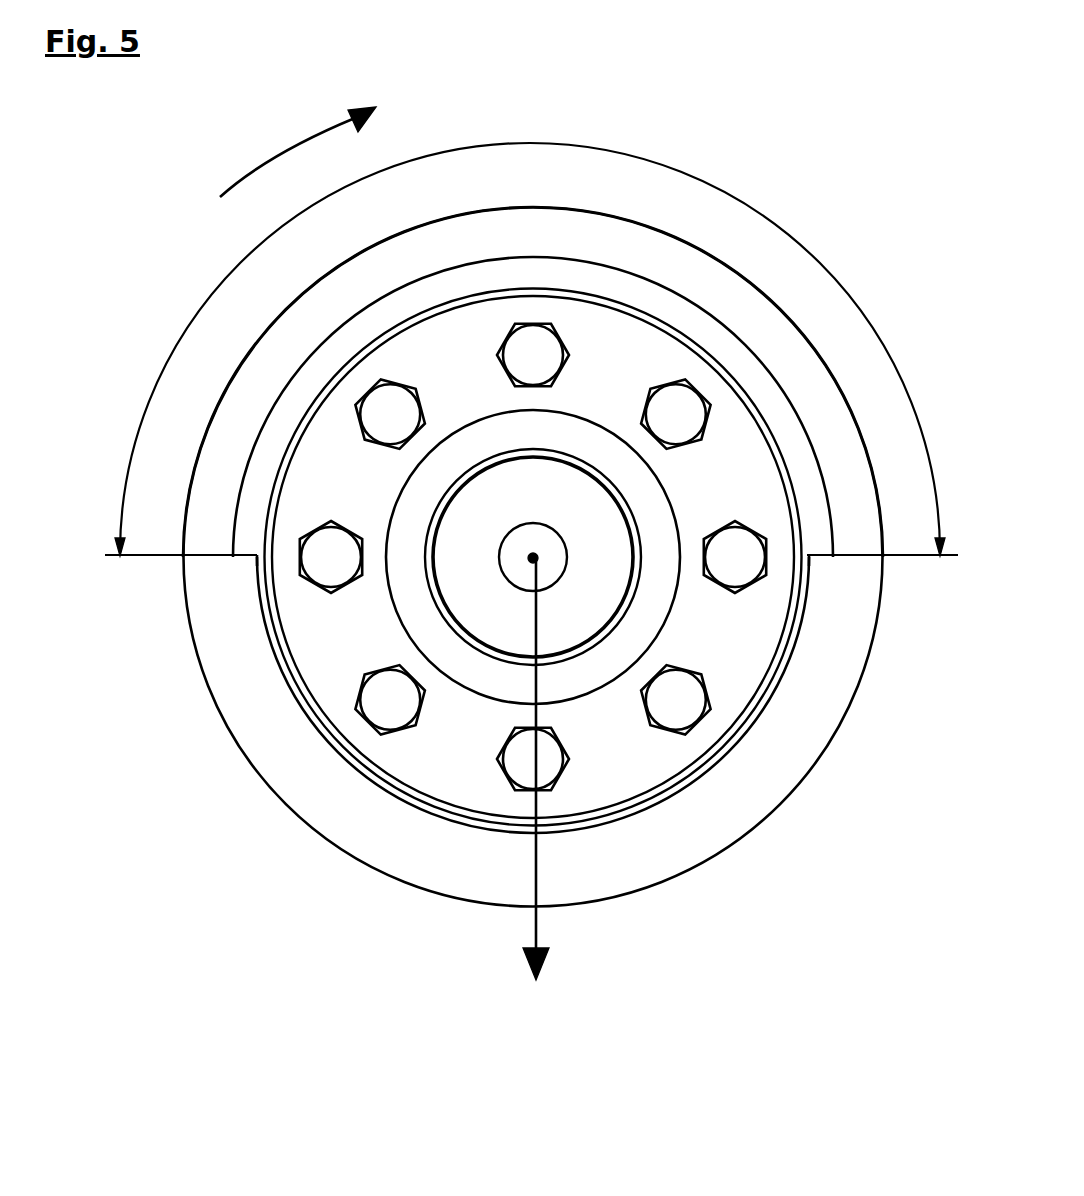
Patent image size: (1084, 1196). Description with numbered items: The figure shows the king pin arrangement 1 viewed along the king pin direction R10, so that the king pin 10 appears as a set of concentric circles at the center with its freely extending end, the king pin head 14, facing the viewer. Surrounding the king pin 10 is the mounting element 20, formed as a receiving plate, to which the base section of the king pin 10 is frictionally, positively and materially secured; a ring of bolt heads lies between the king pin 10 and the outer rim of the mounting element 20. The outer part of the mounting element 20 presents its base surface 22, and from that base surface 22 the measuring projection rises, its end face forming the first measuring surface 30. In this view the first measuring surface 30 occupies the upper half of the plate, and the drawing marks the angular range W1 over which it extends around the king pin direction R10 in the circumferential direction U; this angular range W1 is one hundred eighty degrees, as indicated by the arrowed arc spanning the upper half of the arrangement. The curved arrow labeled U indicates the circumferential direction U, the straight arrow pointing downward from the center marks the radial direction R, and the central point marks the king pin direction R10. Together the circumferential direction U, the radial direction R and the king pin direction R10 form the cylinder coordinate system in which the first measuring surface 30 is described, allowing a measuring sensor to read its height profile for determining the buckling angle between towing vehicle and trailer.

The king pin arrangement 1 is at (170, 207).
The king pin 10 is at (488, 736).
The king pin head 14 is at (500, 622).
The mounting element 20 is at (531, 566).
The base surface 22 is at (268, 745).
The first measuring surface 30 is at (242, 522).
The radial direction R is at (538, 875).
The king pin direction R10 is at (560, 573).
The circumferential direction U is at (290, 142).
The angular range W1 is at (570, 150).